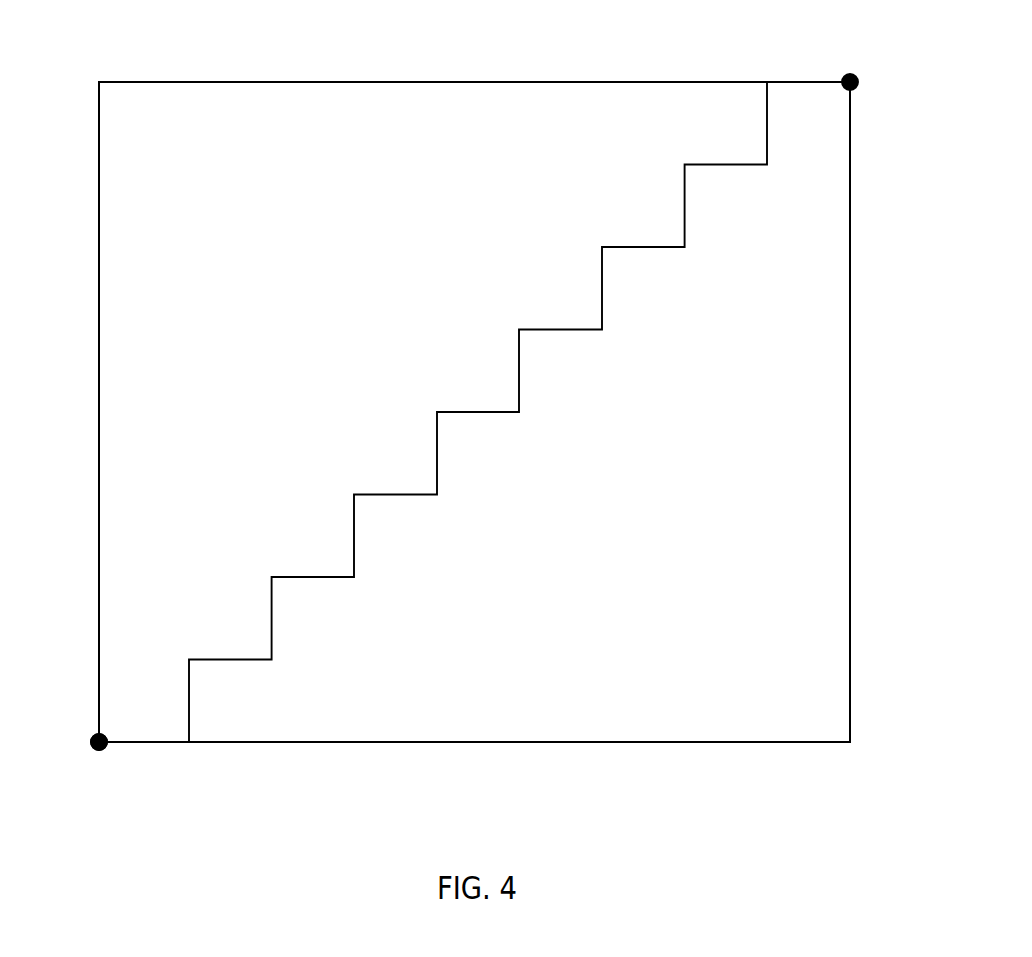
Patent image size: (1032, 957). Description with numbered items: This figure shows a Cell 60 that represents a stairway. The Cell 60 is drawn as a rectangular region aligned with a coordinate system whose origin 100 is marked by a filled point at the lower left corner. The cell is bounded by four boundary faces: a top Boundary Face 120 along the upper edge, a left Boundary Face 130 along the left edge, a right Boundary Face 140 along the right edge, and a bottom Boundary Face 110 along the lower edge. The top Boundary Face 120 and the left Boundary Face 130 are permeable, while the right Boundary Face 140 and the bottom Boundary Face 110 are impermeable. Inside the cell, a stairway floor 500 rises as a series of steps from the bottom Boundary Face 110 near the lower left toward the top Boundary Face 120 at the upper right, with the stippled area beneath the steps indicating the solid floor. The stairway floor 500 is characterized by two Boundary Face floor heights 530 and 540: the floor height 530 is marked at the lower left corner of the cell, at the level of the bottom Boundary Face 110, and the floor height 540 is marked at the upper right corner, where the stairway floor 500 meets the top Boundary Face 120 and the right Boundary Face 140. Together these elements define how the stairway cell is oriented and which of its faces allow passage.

The Cell 60 is at (157, 68).
The top Boundary Face 120 is at (519, 82).
The left Boundary Face 130 is at (98, 460).
The right Boundary Face 140 is at (852, 548).
The bottom Boundary Face 110 is at (677, 744).
The stairway floor 500 is at (468, 410).
The origin 100 is at (100, 750).
The Boundary Face floor height 530 is at (92, 742).
The Boundary Face floor height 540 is at (858, 80).